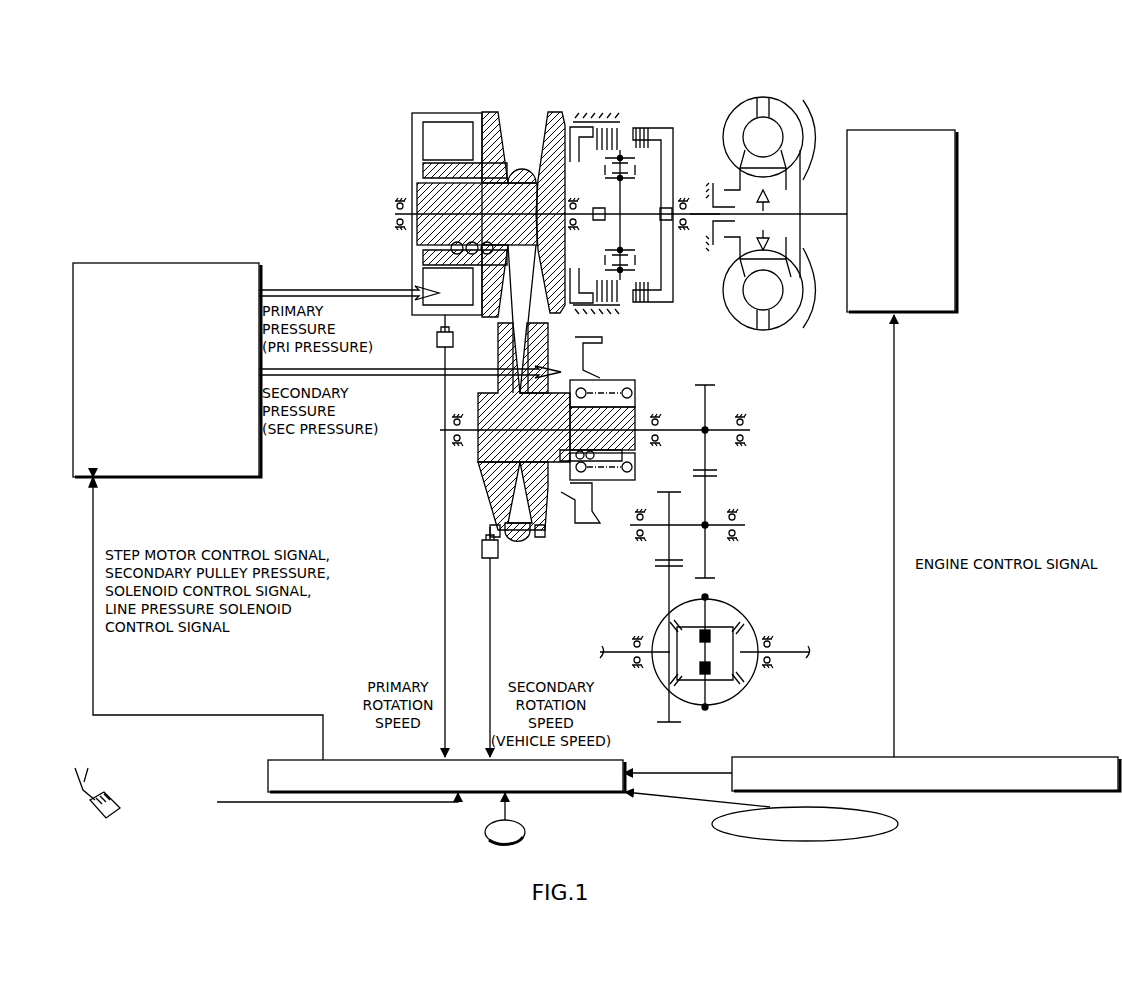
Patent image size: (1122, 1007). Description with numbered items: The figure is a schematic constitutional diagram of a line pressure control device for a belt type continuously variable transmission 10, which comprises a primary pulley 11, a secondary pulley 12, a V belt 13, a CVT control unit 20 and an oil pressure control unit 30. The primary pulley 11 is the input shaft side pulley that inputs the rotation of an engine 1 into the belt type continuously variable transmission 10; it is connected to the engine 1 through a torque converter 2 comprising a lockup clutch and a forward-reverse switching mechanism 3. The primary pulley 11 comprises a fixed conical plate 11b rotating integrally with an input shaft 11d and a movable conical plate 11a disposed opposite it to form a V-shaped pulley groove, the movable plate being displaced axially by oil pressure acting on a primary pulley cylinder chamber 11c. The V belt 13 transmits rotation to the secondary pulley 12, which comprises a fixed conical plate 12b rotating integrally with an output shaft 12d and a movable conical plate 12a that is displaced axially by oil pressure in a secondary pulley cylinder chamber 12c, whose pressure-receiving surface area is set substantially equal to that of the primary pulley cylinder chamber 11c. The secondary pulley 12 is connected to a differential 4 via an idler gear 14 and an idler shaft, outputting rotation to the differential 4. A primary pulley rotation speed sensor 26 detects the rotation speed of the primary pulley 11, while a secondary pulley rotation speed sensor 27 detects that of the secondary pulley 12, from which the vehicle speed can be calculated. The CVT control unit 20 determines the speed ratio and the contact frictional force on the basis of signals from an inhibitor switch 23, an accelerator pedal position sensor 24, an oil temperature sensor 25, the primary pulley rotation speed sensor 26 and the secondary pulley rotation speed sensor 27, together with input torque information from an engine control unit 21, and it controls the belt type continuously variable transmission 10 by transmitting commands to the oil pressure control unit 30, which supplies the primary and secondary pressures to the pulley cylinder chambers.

The engine 1 is at (879, 130).
The torque converter 2 is at (765, 92).
The forward-reverse switching mechanism 3 is at (605, 108).
The differential 4 is at (745, 603).
The belt type continuously variable transmission 10 is at (481, 106).
The primary pulley 11 is at (506, 188).
The movable conical plate 11a is at (498, 112).
The fixed conical plate 11b is at (562, 112).
The primary pulley cylinder chamber 11c is at (450, 118).
The input shaft 11d is at (703, 218).
The secondary pulley 12 is at (600, 362).
The movable conical plate 12a is at (540, 530).
The fixed conical plate 12b is at (498, 490).
The secondary pulley cylinder chamber 12c is at (562, 526).
The output shaft 12d is at (673, 426).
The V belt 13 is at (525, 312).
The idler gear 14 is at (668, 518).
The CVT control unit 20 is at (297, 770).
The engine control unit 21 is at (756, 768).
The inhibitor switch 23 is at (898, 825).
The accelerator pedal position sensor 24 is at (95, 776).
The oil temperature sensor 25 is at (512, 828).
The primary pulley rotation speed sensor 26 is at (437, 335).
The secondary pulley rotation speed sensor 27 is at (482, 544).
The oil pressure control unit 30 is at (130, 280).